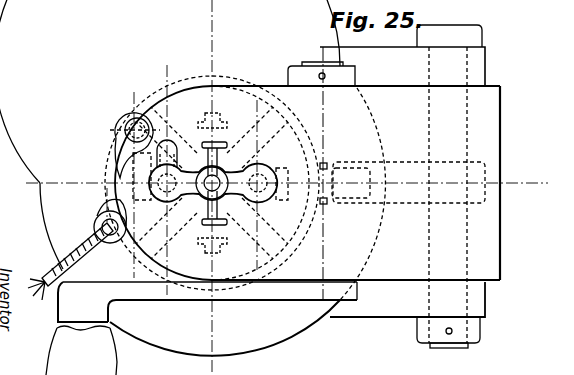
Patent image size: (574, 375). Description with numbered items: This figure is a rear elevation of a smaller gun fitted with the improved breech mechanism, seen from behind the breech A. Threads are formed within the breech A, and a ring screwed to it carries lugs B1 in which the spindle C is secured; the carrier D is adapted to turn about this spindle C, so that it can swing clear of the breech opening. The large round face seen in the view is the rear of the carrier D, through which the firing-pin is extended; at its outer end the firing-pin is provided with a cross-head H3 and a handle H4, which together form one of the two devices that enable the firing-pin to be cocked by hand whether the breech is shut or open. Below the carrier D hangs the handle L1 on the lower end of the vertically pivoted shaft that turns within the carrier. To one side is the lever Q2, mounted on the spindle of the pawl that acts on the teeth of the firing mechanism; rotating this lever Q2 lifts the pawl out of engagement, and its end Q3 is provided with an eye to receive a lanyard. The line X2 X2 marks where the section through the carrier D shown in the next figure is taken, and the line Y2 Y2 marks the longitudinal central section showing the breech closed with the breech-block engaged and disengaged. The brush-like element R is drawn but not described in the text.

The breech A is at (192, 178).
The lugs B1 is at (386, 186).
The spindle C is at (461, 112).
The carrier D is at (307, 195).
The section line X2 X2 is at (210, 196).
The section line Y2 Y2 is at (283, 184).
The lever Q2 is at (118, 142).
The end of the lever Q3 is at (98, 221).
The brush R is at (86, 250).
The handle L1 is at (81, 328).
The cross-head H3 is at (210, 180).
The handle H4 is at (221, 150).